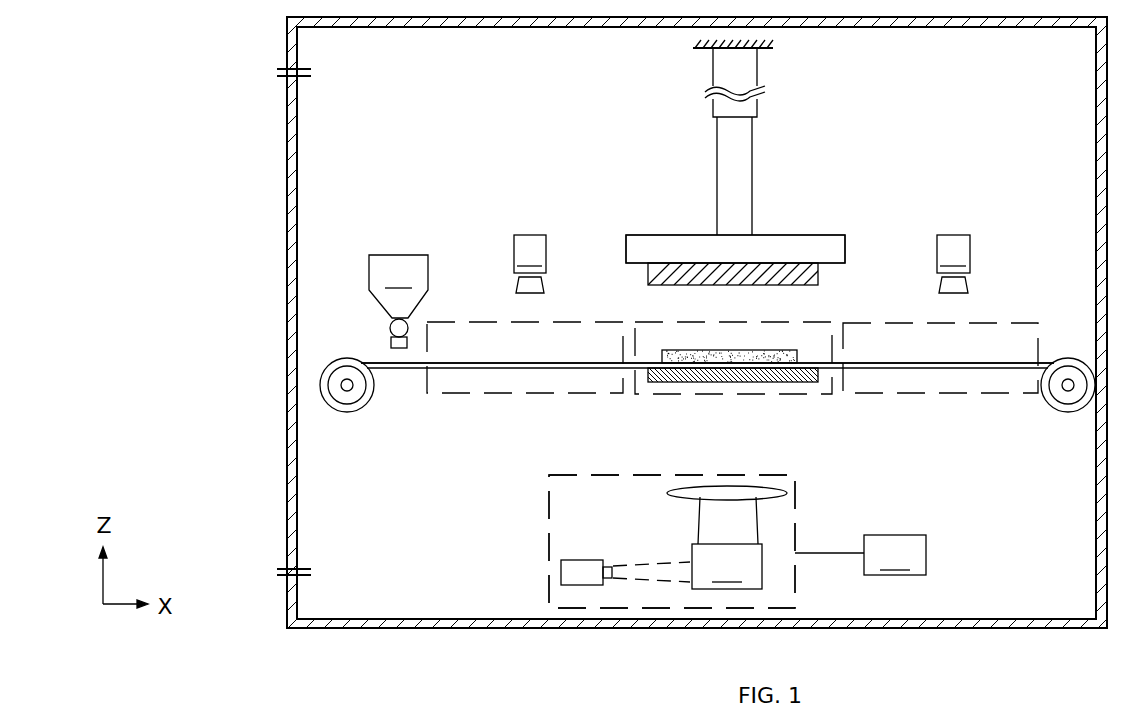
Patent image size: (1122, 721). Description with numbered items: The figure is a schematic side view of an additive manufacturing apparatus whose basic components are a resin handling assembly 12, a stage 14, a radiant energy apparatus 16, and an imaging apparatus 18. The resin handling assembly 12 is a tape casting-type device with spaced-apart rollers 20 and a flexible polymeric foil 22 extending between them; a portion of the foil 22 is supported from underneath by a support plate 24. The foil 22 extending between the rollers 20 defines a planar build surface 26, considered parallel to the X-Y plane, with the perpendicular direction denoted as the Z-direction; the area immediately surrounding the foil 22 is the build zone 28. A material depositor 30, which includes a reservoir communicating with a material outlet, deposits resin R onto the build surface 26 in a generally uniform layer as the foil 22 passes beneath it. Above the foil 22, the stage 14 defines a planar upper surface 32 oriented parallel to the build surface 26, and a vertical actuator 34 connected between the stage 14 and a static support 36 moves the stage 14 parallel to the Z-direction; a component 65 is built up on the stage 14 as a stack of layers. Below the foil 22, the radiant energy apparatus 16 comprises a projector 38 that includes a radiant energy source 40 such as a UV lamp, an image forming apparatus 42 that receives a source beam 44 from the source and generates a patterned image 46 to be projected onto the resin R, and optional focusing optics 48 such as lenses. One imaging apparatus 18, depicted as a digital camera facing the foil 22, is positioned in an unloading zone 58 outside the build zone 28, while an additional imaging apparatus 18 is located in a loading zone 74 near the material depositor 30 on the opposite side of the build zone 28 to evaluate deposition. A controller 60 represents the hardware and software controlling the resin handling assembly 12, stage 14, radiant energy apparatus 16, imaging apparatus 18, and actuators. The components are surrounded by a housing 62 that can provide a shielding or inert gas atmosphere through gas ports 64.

The resin handling assembly 12 is at (522, 422).
The stage 14 is at (823, 237).
The radiant energy apparatus 16 is at (826, 508).
The imaging apparatus 18 is at (742, 264).
The rollers 20 is at (345, 407).
The foil 22 is at (949, 369).
The support plate 24 is at (760, 382).
The build surface 26 is at (866, 357).
The build zone 28 is at (660, 395).
The material depositor 30 is at (398, 301).
The planar upper surface 32 is at (840, 271).
The vertical actuator 34 is at (742, 146).
The static support 36 is at (763, 43).
The projector 38 is at (797, 592).
The radiant energy source 40 is at (562, 573).
The image forming apparatus 42 is at (727, 566).
The source beam 44 is at (680, 563).
The patterned image 46 is at (700, 509).
The focusing optics 48 is at (668, 491).
The unloading zone 58 is at (878, 395).
The controller 60 is at (860, 555).
The housing 62 is at (468, 27).
The gas ports 64 is at (307, 77).
The component 65 is at (660, 278).
The loading zone 74 is at (545, 395).
The resin R is at (693, 350).